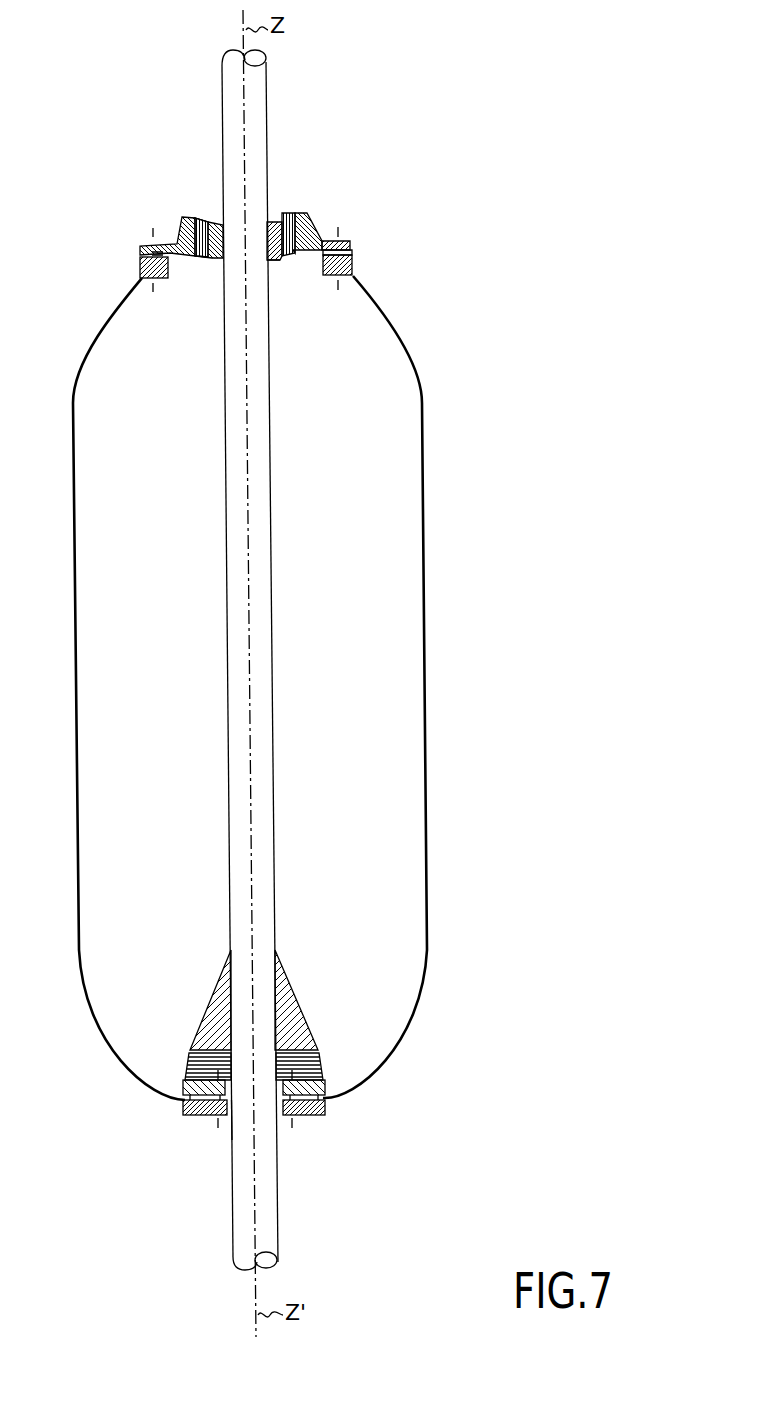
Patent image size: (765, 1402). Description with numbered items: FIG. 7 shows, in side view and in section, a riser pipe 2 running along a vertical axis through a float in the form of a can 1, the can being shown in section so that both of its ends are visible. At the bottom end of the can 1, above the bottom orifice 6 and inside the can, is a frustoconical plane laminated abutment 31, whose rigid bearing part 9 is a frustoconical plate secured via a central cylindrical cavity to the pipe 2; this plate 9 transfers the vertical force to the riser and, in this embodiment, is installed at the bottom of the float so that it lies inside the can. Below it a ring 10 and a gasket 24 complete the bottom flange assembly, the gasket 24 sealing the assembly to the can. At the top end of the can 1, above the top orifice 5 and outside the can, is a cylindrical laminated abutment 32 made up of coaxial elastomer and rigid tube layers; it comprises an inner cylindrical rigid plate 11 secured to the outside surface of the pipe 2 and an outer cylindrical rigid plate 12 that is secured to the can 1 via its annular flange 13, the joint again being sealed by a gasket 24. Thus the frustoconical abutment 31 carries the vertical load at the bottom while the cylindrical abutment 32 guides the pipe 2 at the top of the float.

The vessel 1 is at (440, 669).
The rod 2 is at (233, 638).
The cylindrical laminated abutment 32 is at (203, 214).
The frustoconical plane laminated abutment 31 is at (189, 1065).
The top orifice 5 is at (272, 262).
The bottom orifice 6 is at (228, 1127).
The rigid bearing part 9 is at (293, 990).
The threaded ring 10 is at (323, 1082).
The inner cylindrical rigid plate 11 is at (273, 223).
The outer cylindrical rigid plate 12 is at (307, 220).
The annular flange 13 is at (350, 245).
The gasket 24 is at (145, 243).